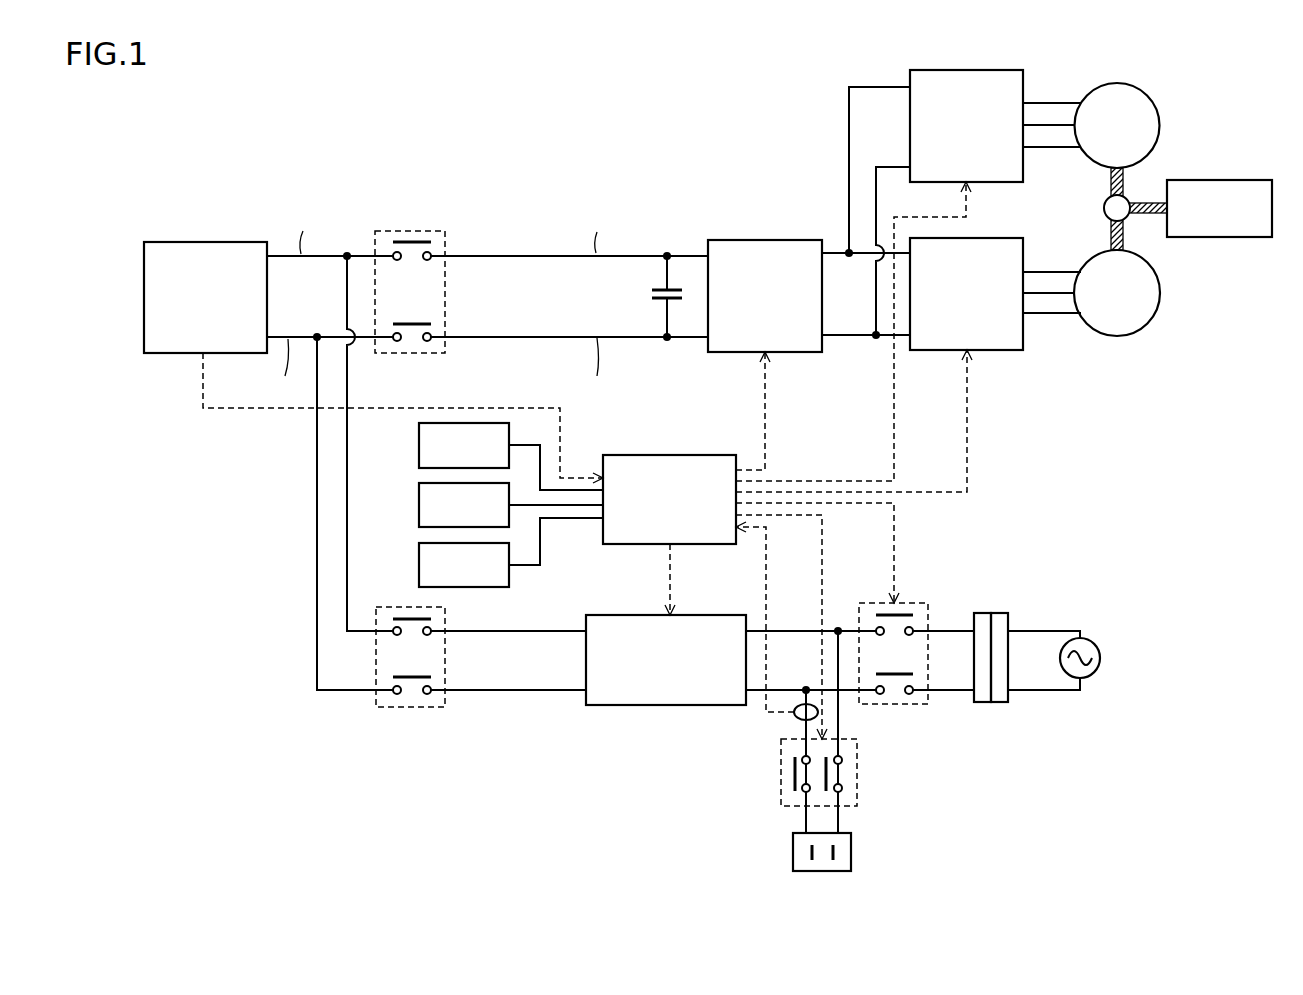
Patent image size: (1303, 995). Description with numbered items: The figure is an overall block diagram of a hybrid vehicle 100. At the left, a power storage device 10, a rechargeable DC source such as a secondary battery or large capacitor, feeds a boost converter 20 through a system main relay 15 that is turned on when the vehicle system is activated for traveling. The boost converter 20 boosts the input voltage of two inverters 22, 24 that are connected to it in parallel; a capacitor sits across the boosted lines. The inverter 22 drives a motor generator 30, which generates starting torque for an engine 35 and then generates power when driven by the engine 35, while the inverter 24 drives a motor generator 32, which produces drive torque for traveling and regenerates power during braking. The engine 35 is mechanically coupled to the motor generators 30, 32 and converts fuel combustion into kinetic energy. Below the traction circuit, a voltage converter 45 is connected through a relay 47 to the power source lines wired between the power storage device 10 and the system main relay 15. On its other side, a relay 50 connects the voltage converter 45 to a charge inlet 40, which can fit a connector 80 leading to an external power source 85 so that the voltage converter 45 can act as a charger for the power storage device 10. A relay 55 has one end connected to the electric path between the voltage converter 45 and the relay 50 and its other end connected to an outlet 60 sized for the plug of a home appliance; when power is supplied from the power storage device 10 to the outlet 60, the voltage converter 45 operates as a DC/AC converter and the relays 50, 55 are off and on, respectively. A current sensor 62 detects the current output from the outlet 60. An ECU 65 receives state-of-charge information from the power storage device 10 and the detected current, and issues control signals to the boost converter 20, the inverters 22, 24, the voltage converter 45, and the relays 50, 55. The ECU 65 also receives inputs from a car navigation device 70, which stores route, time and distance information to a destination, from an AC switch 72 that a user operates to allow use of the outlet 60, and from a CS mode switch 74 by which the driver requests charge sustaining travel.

The hybrid vehicle 100 is at (184, 129).
The power storage device 10 is at (203, 242).
The system main relay 15 is at (400, 231).
The boost converter 20 is at (788, 240).
The inverter 22 is at (988, 70).
The inverter 24 is at (988, 238).
The motor generator 30 is at (1119, 83).
The motor generator 32 is at (1117, 337).
The engine 35 is at (1225, 180).
The charge inlet 40 is at (983, 613).
The voltage converter 45 is at (710, 615).
The relay 47 is at (410, 707).
The relay 50 is at (903, 603).
The relay 55 is at (857, 768).
The outlet 60 is at (851, 848).
The current sensor 62 is at (793, 716).
The ECU 65 is at (710, 455).
The car navigation device 70 is at (419, 447).
The AC switch 72 is at (419, 507).
The CS mode switch 74 is at (419, 567).
The connector 80 is at (1000, 613).
The external power source 85 is at (1100, 658).